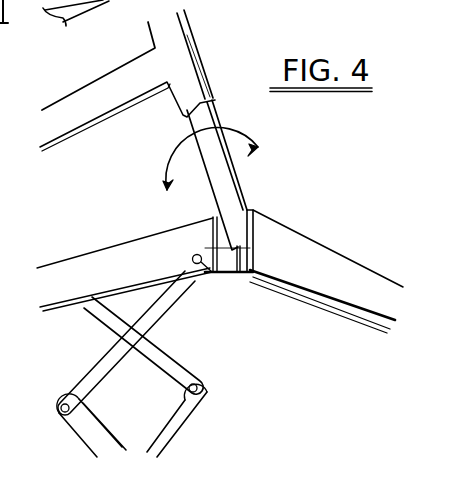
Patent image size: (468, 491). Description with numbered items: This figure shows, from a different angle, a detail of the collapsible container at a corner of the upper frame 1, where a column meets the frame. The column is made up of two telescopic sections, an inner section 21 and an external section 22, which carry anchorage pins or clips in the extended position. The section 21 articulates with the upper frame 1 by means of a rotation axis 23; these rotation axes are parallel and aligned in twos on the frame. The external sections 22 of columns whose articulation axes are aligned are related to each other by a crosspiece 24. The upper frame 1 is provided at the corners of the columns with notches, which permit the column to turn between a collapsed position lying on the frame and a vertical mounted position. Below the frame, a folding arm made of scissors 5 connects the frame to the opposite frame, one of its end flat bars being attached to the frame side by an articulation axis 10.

The upper frame 1 is at (317, 267).
The scissors 5 is at (62, 405).
The articulation axis 10 is at (204, 264).
The telescopic section 21 is at (229, 184).
The external section 22 is at (197, 53).
The rotation axis 23 is at (268, 237).
The crosspiece 24 is at (86, 110).